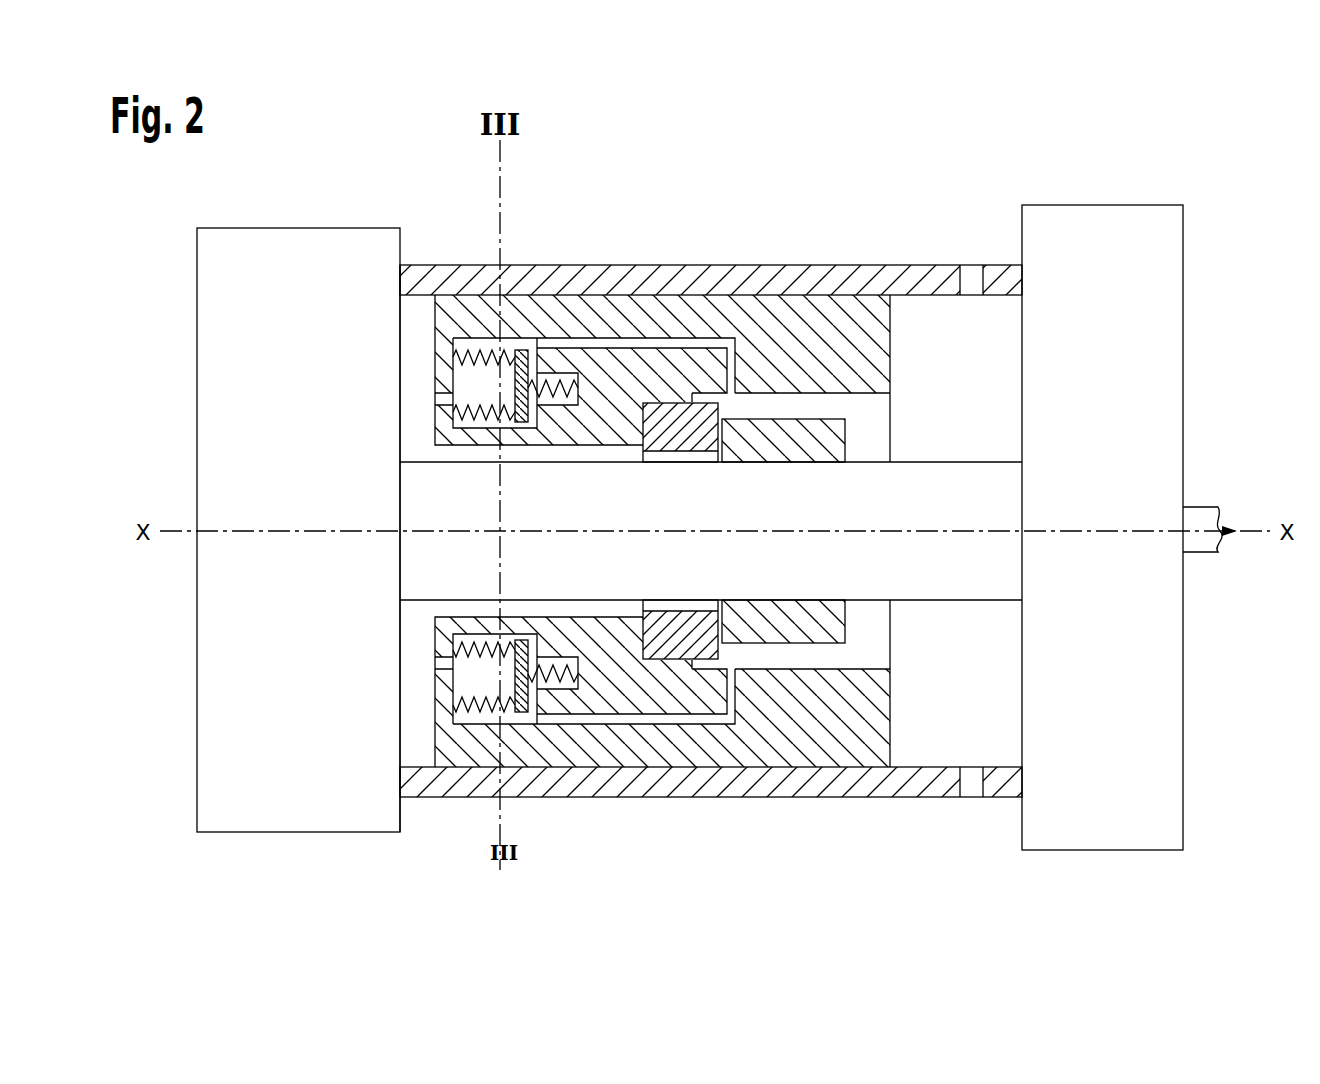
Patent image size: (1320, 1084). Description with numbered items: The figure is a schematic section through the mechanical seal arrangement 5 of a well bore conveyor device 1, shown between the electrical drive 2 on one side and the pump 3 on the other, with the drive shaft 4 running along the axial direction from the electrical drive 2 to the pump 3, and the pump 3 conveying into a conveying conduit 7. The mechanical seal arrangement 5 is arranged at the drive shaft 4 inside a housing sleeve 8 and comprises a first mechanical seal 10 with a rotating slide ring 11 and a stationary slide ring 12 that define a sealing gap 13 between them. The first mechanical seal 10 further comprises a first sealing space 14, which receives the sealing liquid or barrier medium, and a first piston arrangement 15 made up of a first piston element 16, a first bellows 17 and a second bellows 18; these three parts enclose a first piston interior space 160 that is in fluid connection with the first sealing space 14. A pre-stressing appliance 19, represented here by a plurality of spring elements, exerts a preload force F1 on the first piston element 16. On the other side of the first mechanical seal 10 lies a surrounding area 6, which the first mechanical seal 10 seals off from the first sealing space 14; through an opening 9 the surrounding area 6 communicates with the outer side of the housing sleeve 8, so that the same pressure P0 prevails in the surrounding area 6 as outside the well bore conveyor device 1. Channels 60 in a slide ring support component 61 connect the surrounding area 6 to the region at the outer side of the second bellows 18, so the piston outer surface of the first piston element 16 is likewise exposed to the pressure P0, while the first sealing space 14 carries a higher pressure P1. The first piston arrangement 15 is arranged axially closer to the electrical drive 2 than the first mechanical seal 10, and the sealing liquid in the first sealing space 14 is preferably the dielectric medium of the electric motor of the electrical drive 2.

The well bore conveyor device 1 is at (336, 203).
The electrical drive 2 is at (300, 805).
The pump 3 is at (1147, 372).
The drive shaft 4 is at (932, 603).
The mechanical seal arrangement 5 is at (634, 818).
The surrounding area 6 is at (942, 389).
The conveying conduit 7 is at (1200, 515).
The housing sleeve 8 is at (845, 285).
The opening 9 is at (970, 280).
The first mechanical seal 10 is at (757, 713).
The rotating slide ring 11 is at (797, 447).
The stationary slide ring 12 is at (688, 418).
The sealing gap 13 is at (722, 430).
The first sealing space 14 is at (414, 325).
The first piston arrangement 15 is at (549, 736).
The first piston element 16 is at (518, 712).
The first bellows 17 is at (455, 698).
The second bellows 18 is at (478, 700).
The pre-stressing appliance 19 is at (562, 378).
The channels 60 is at (652, 343).
The slide ring support component 61 is at (680, 690).
The first piston interior space 160 is at (512, 375).
The preload force F1 is at (545, 384).
The pressure in the surrounding area P0 is at (983, 343).
The pressure in the first sealing space P1 is at (424, 318).